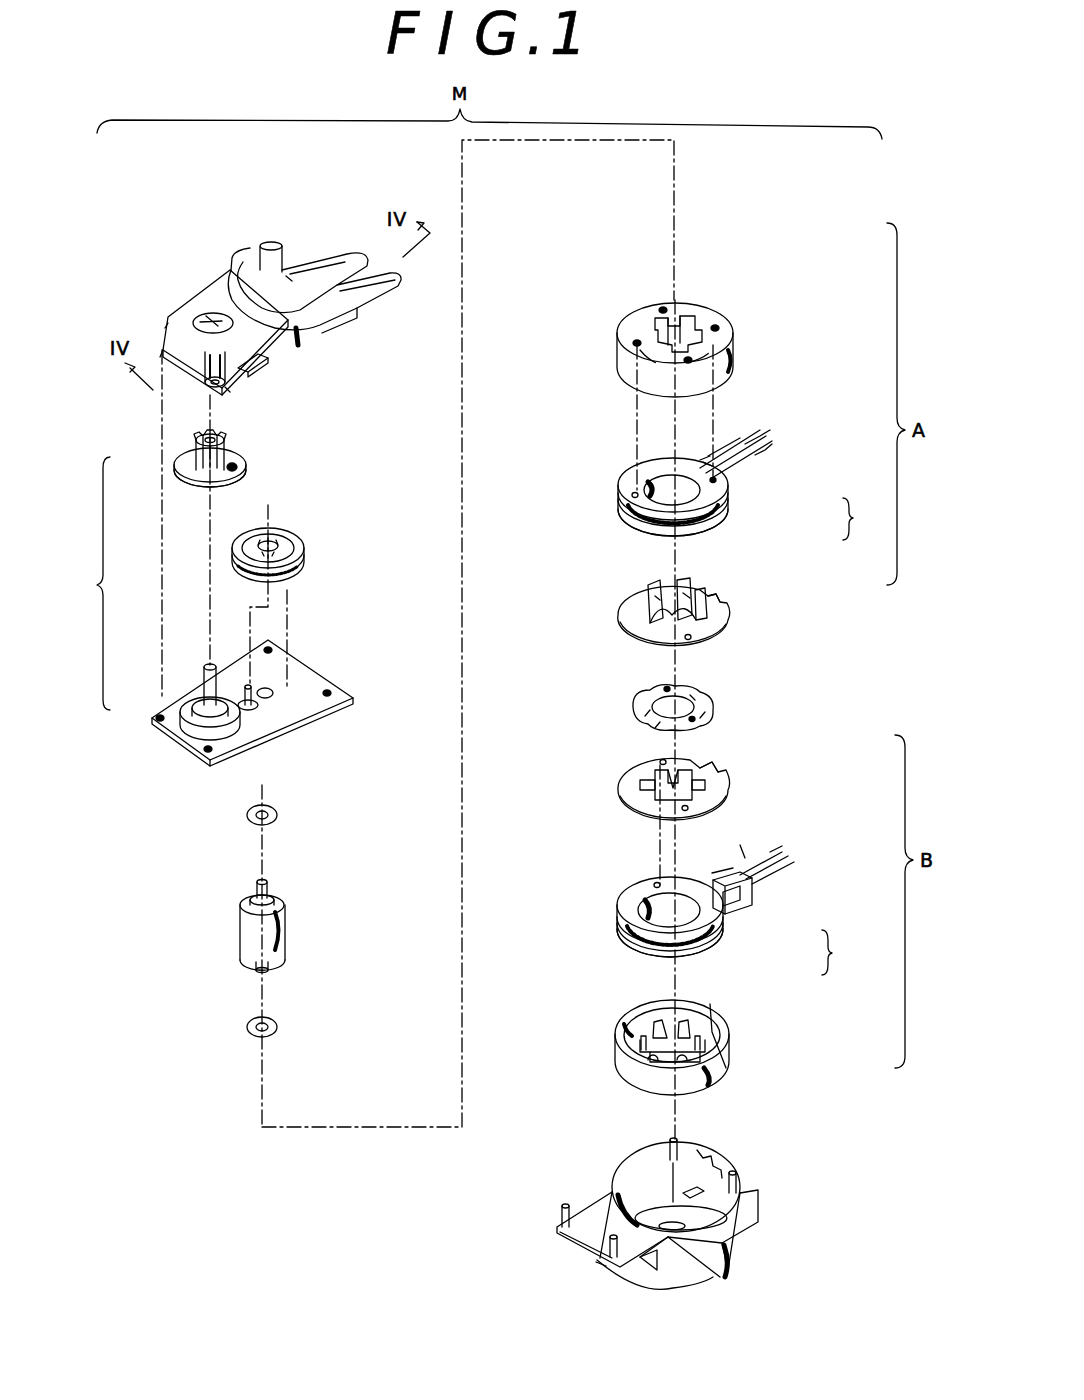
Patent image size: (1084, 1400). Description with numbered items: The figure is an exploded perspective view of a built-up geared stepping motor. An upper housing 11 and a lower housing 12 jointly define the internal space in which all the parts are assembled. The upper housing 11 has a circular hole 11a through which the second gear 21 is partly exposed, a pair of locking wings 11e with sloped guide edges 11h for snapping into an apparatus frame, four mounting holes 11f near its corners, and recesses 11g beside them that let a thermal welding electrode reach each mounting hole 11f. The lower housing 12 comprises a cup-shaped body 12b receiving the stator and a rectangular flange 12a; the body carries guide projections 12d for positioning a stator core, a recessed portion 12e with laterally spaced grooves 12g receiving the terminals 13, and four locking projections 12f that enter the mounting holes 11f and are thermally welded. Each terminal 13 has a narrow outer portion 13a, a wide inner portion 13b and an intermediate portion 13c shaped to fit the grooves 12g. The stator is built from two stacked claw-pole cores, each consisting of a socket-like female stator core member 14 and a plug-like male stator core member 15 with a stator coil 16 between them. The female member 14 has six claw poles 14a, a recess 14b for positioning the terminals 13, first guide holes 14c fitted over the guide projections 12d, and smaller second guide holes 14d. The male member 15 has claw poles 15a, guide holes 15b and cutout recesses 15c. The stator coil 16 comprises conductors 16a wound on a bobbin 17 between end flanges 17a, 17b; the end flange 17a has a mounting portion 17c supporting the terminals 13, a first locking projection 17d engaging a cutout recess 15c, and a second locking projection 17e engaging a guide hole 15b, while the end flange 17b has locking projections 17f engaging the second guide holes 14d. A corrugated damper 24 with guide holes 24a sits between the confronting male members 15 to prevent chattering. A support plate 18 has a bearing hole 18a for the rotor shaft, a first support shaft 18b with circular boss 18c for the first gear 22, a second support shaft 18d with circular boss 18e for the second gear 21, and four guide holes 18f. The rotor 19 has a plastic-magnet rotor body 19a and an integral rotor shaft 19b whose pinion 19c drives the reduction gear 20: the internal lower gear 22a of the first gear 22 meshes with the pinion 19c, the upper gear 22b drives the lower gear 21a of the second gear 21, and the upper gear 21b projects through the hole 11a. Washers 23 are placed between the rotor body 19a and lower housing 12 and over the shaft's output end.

The upper housing 11 is at (210, 255).
The circular hole 11a is at (210, 315).
The locking wings 11e is at (268, 366).
The mounting holes 11f is at (287, 277).
The recesses 11g is at (262, 260).
The sloped guide edges 11h is at (243, 368).
The lower housing 12 is at (612, 1170).
The rectangular flange 12a is at (587, 1232).
The cup-shaped body 12b is at (642, 1183).
The guide projections 12d is at (712, 1278).
The recessed portion 12e is at (710, 1170).
The locking projections 12f is at (680, 1140).
The grooves 12g is at (745, 1168).
The terminals 13 is at (767, 443).
The narrow outer portion 13a is at (763, 463).
The wide inner portion 13b is at (705, 458).
The intermediate portion 13c is at (758, 475).
The female stator core member 14 is at (612, 312).
The claw poles 14a is at (700, 333).
The recess 14b is at (685, 320).
The first guide holes 14c is at (663, 306).
The second guide holes 14d is at (633, 343).
The male stator core member 15 is at (610, 617).
The claw poles 15a is at (657, 587).
The guide holes 15b is at (692, 636).
The cutout recesses 15c is at (713, 597).
The stator coil 16 is at (615, 470).
The conductors 16a is at (623, 515).
The bobbin 17 is at (851, 736).
The end flange 17a is at (727, 520).
The end flange 17b is at (733, 505).
The mounting portion 17c is at (750, 897).
The first locking projection 17d is at (740, 912).
The second locking projection 17e is at (655, 883).
The locking projections 17f is at (632, 495).
The support plate 18 is at (176, 692).
The bearing hole 18a is at (293, 698).
The first support shaft 18b is at (268, 698).
The circular boss 18c is at (248, 706).
The second support shaft 18d is at (210, 665).
The circular boss 18e is at (203, 724).
The guide holes 18f is at (270, 648).
The rotor 19 is at (297, 940).
The rotor body 19a is at (240, 932).
The rotor shaft 19b is at (253, 899).
The pinion 19c is at (270, 893).
The reduction gear 20 is at (87, 583).
The second gear 21 is at (168, 460).
The lower gear 21a is at (230, 480).
The upper gear 21b is at (224, 453).
The first gear 22 is at (228, 563).
The lower gear 22a is at (302, 560).
The upper gear 22b is at (280, 548).
The washer 23 is at (278, 815).
The damper 24 is at (713, 703).
The guide holes 24a is at (665, 687).